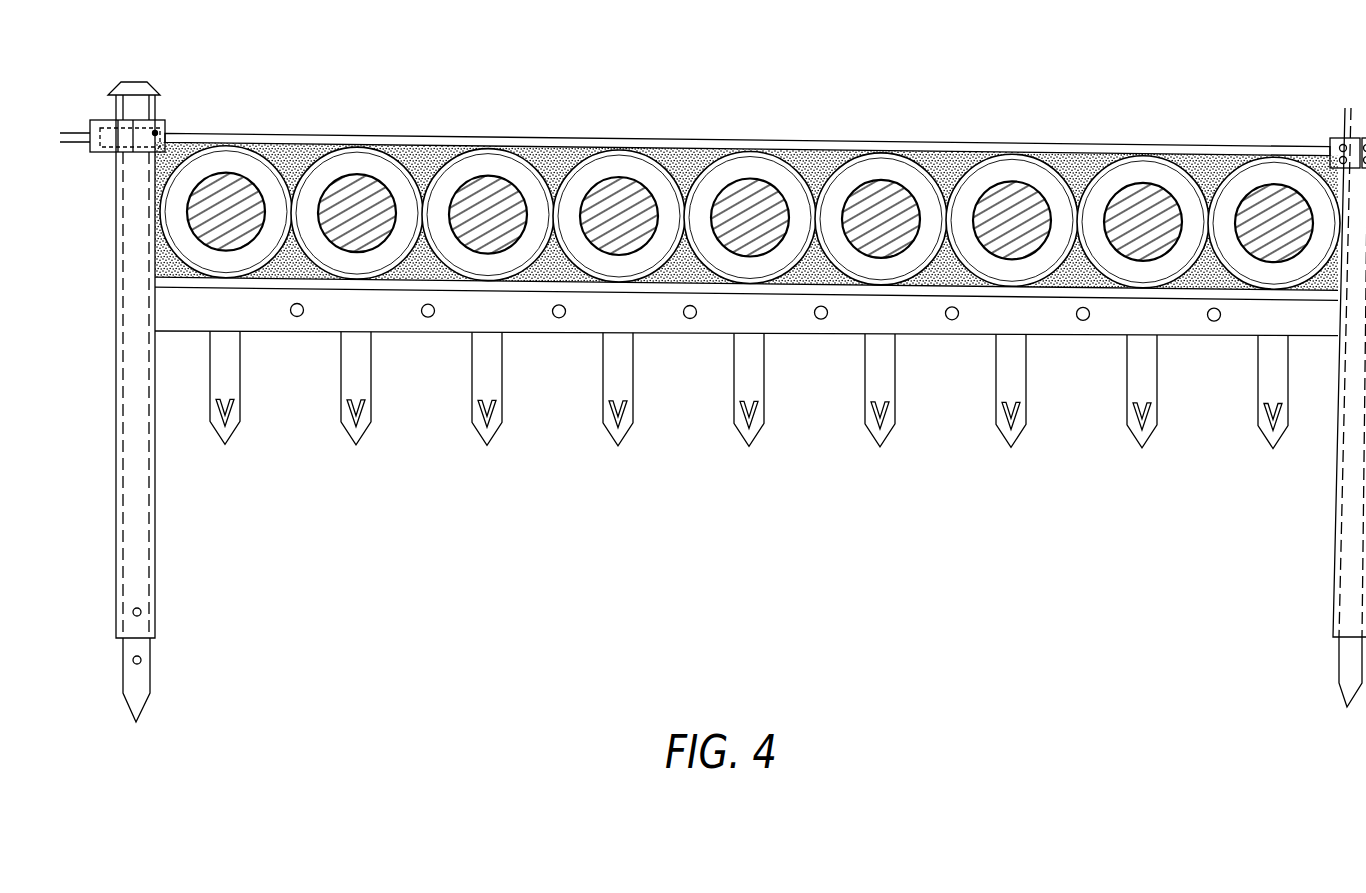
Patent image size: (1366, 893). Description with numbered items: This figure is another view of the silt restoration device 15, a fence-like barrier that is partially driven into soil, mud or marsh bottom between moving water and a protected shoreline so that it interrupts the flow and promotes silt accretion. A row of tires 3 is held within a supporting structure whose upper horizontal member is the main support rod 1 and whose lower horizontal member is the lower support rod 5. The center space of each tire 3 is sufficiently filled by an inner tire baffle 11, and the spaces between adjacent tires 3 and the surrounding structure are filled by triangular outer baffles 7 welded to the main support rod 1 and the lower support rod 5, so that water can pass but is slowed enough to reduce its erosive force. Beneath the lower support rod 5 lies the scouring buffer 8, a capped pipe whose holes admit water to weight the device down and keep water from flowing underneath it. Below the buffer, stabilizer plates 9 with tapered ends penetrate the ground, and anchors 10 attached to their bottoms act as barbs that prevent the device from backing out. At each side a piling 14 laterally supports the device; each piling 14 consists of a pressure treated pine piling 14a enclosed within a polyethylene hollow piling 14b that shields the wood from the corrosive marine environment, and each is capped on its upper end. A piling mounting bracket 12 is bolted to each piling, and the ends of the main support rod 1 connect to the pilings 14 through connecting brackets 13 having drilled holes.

The main support rod 1 is at (933, 147).
The tire 3 is at (513, 260).
The lower support rod 5 is at (958, 290).
The outer baffle 7 is at (295, 165).
The scouring buffer 8 is at (398, 320).
The stabilizer plate 9 is at (355, 373).
The anchor 10 is at (215, 425).
The inner tire baffle 11 is at (633, 212).
The piling mounting bracket 12 is at (156, 133).
The connecting bracket 13 is at (1330, 141).
The piling 14 is at (195, 402).
The pressure treated pine piling 14a is at (153, 683).
The polyethylene hollow piling 14b is at (157, 557).
The silt restoration device 15 is at (1190, 540).